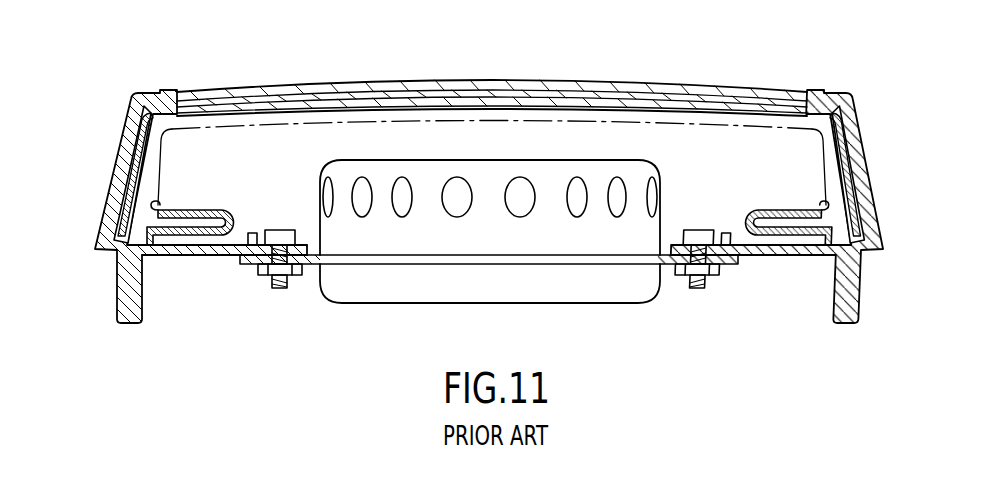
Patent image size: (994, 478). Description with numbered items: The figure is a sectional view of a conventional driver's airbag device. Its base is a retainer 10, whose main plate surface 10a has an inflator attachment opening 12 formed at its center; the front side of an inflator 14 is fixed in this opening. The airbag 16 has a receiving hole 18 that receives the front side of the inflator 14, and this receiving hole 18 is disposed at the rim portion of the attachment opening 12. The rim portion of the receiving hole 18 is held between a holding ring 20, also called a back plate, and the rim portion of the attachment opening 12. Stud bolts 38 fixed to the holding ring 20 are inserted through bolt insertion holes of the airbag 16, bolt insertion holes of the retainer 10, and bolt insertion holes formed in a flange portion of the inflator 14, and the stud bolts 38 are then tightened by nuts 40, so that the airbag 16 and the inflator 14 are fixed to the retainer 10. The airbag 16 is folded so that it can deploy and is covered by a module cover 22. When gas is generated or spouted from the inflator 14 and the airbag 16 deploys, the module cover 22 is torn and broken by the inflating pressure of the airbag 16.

The retainer 10 is at (176, 259).
The main plate surface 10a is at (200, 259).
The inflator attachment opening 12 is at (318, 264).
The inflator 14 is at (438, 298).
The airbag 16 is at (332, 124).
The receiving hole 18 is at (300, 238).
The holding ring 20 is at (253, 233).
The module cover 22 is at (538, 94).
The stud bolts 38 is at (277, 230).
The nuts 40 is at (271, 289).